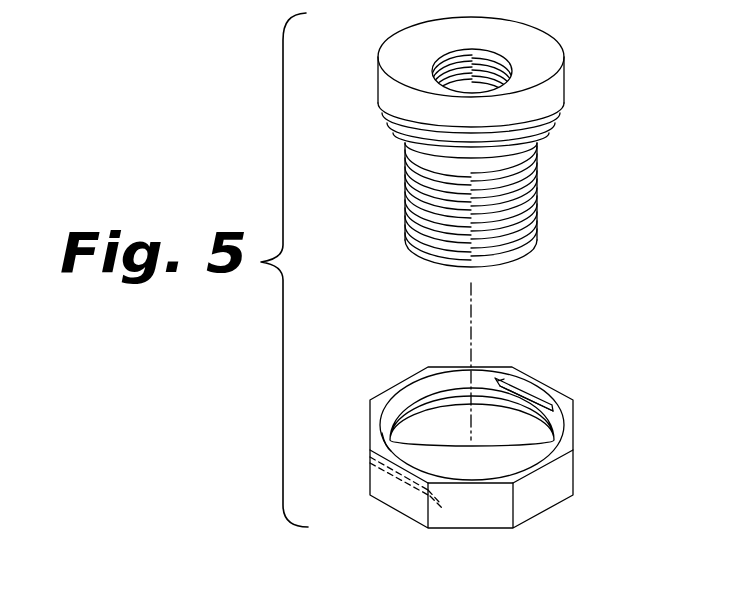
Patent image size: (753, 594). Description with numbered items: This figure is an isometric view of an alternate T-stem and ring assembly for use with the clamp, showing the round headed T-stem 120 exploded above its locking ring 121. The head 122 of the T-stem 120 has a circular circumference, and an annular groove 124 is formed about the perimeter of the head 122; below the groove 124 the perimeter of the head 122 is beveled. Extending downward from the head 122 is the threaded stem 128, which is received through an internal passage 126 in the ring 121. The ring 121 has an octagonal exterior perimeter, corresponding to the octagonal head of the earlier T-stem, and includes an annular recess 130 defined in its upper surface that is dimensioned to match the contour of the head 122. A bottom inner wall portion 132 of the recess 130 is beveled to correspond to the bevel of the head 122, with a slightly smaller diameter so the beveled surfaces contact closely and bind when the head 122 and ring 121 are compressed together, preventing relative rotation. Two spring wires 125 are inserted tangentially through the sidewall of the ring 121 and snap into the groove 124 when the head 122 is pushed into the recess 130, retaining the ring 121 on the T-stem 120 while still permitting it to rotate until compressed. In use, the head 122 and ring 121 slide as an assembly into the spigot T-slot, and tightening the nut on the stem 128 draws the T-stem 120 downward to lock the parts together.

The round headed T-stem 120 is at (509, 138).
The locking ring 121 is at (493, 431).
The head 122 is at (530, 54).
The annular groove 124 is at (562, 89).
The spring wires 125 is at (497, 382).
The internal passage 126 is at (520, 417).
The stem 128 is at (537, 194).
The annular recess 130 is at (455, 388).
The bottom inner wall portion 132 is at (393, 421).